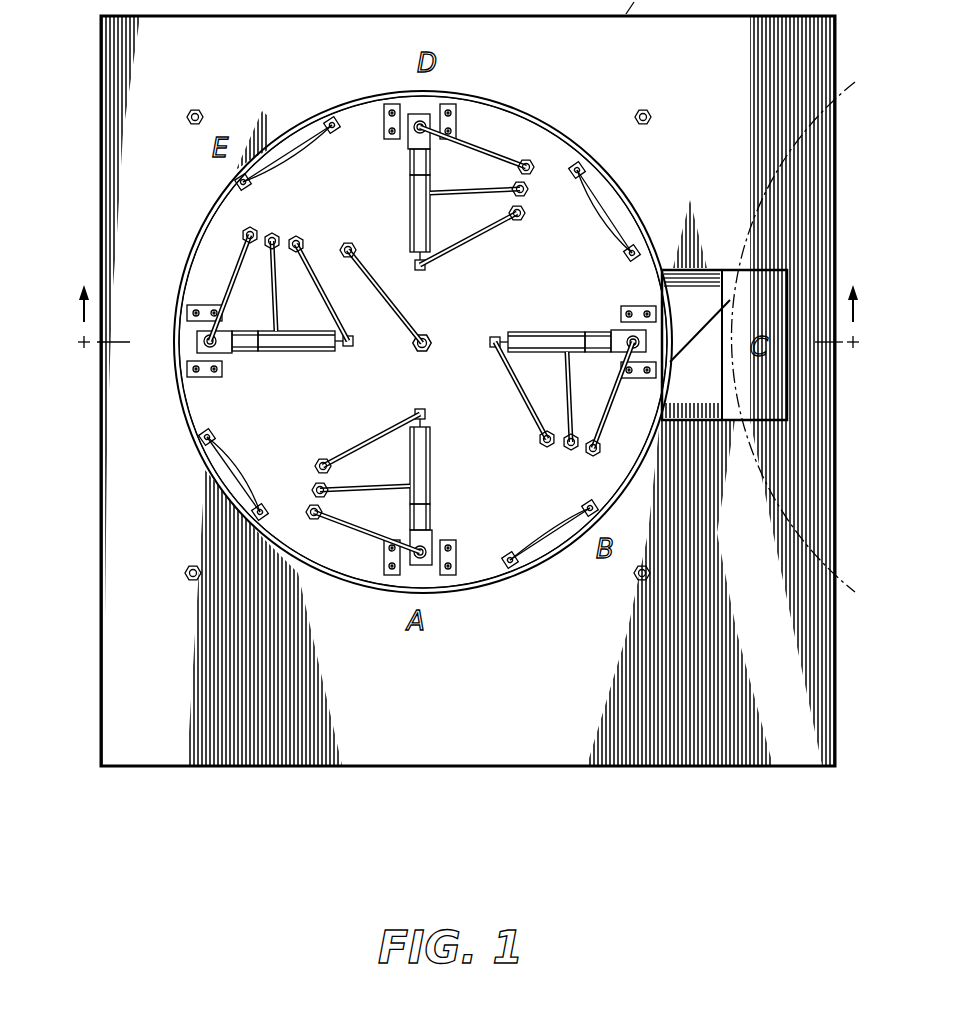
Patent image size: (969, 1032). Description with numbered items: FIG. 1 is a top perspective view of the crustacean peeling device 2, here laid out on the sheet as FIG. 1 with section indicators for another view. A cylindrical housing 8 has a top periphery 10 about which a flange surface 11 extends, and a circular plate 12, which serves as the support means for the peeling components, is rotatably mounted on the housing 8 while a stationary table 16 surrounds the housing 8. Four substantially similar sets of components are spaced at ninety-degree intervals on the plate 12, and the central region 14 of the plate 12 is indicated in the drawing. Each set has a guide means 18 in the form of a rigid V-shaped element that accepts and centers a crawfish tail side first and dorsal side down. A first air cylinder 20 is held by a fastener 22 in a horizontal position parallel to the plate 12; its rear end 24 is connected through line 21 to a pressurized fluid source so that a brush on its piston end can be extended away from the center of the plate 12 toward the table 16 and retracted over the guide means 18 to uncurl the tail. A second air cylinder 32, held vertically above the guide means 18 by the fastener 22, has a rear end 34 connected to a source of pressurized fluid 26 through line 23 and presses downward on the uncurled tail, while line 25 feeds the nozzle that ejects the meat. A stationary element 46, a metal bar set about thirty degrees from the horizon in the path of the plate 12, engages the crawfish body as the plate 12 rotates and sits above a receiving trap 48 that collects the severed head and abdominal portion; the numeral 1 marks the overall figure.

The apparatus 1 is at (636, 8).
The device 2 is at (466, 300).
The housing 8 is at (592, 155).
The top periphery 10 is at (526, 112).
The flange surface 11 is at (632, 207).
The circular plate 12 is at (356, 132).
The central hub 14 is at (512, 290).
The stationary table 16 is at (522, 745).
The guide means 18 is at (402, 122).
The first air cylinder 20 is at (418, 222).
The line 21 is at (492, 232).
The fastener 22 is at (412, 170).
The line 23 is at (466, 153).
The rear end 24 is at (352, 347).
The line 25 is at (460, 192).
The source of pressurized fluid 26 is at (407, 322).
The second air cylinder 32 is at (408, 144).
The rear end 34 is at (422, 125).
The stationary element 46 is at (733, 303).
The receiving trap 48 is at (716, 363).